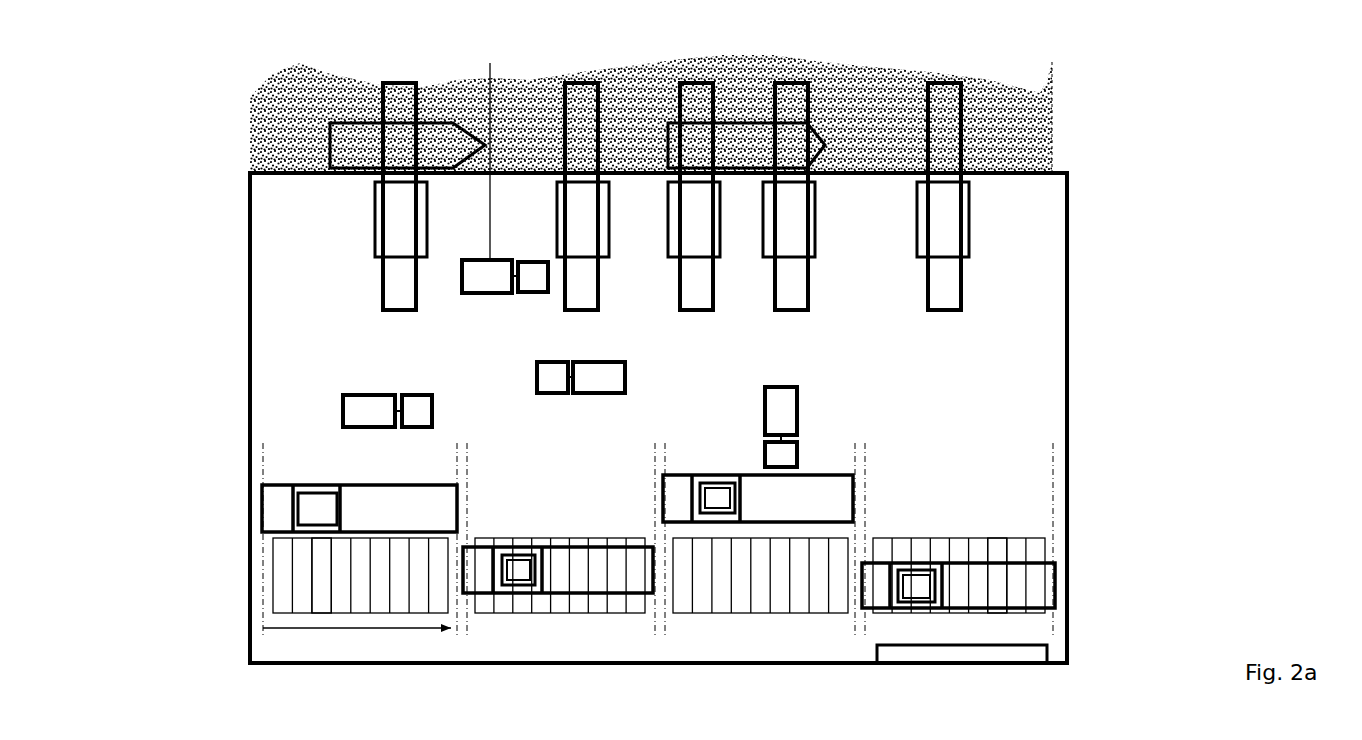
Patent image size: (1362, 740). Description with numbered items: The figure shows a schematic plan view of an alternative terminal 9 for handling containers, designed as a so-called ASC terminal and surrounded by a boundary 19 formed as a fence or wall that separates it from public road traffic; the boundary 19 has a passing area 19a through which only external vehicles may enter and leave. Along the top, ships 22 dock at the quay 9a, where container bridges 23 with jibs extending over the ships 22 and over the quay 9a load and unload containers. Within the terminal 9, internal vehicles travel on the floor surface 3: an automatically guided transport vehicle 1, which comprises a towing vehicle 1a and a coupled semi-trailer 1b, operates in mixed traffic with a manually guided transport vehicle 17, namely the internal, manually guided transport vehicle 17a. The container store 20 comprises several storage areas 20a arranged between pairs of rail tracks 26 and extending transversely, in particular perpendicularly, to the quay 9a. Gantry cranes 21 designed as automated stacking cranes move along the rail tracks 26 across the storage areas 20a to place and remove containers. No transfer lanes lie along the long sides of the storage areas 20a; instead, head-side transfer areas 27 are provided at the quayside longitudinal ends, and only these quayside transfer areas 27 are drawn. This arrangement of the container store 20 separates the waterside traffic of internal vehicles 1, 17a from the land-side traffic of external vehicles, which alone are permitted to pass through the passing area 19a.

The automatically guided transport vehicle 1 is at (1090, 378).
The towing vehicle 1a is at (417, 409).
The semi-trailer 1b is at (373, 405).
The floor surface 3 is at (960, 357).
The terminal 9 is at (212, 253).
The quay 9a is at (348, 185).
The manually guided transport vehicle 17 is at (553, 380).
The internal, manually guided transport vehicle 17a is at (519, 361).
The boundary 19 is at (1075, 283).
The passing area 19a is at (955, 652).
The container store 20 is at (330, 558).
The storage area 20a is at (320, 590).
The gantry crane 21 is at (320, 510).
The ship 22 is at (743, 140).
The container bridge 23 is at (402, 243).
The rail track 26 is at (262, 600).
The transfer area 27 is at (310, 462).